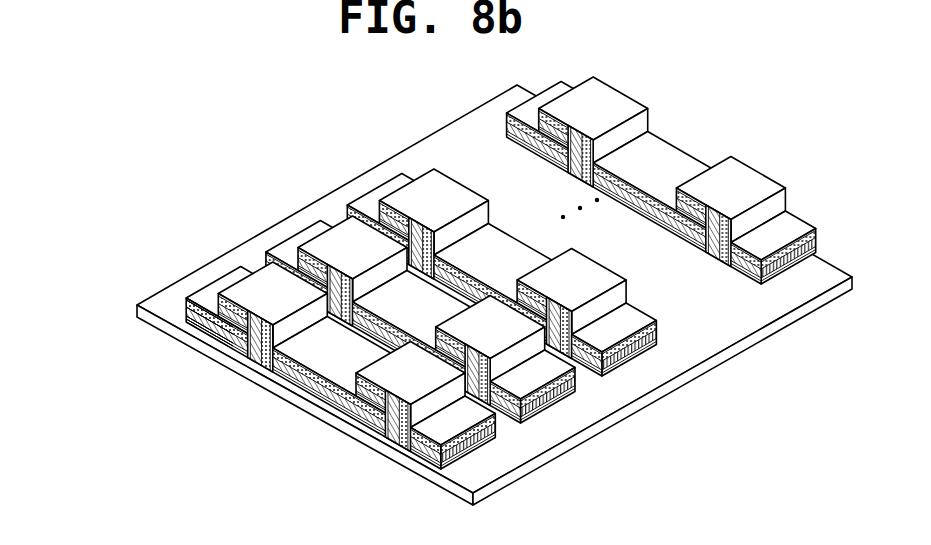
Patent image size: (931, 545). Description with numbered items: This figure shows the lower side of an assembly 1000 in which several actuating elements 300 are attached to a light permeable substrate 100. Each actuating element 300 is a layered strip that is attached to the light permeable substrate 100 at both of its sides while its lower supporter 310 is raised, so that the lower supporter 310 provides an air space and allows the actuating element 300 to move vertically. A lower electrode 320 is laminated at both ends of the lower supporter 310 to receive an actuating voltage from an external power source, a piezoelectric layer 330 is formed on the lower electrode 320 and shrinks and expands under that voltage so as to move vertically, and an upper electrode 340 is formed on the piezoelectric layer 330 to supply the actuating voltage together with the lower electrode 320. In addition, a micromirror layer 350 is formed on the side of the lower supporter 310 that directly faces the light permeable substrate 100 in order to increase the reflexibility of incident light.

The electronic device 1000 is at (201, 146).
The light permeable substrate 100 is at (257, 377).
The actuating element 300 is at (77, 249).
The lower supporter 310 is at (187, 317).
The lower electrode 320 is at (187, 311).
The piezoelectric layer 330 is at (187, 305).
The upper electrode 340 is at (187, 300).
The micromirror layer 350 is at (192, 326).